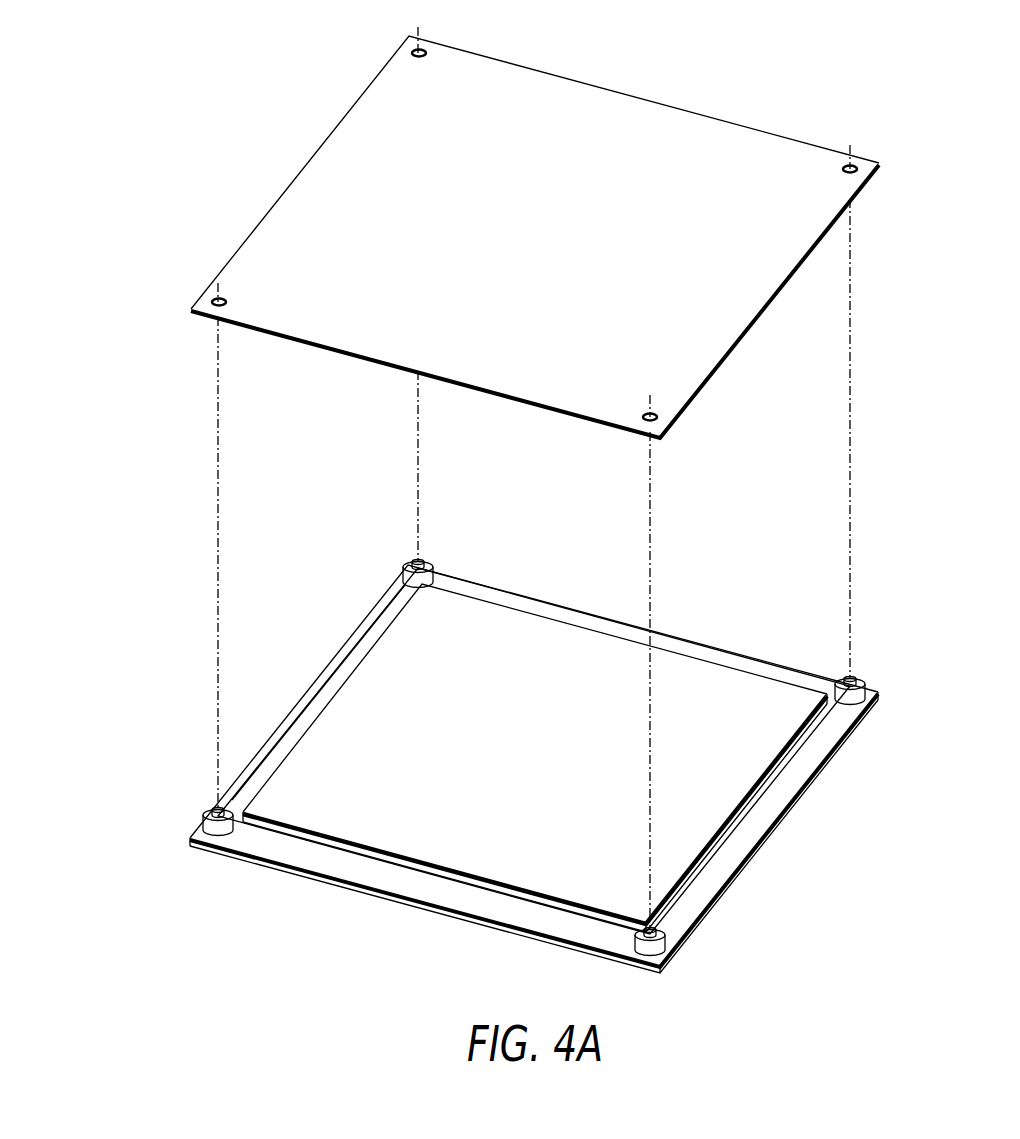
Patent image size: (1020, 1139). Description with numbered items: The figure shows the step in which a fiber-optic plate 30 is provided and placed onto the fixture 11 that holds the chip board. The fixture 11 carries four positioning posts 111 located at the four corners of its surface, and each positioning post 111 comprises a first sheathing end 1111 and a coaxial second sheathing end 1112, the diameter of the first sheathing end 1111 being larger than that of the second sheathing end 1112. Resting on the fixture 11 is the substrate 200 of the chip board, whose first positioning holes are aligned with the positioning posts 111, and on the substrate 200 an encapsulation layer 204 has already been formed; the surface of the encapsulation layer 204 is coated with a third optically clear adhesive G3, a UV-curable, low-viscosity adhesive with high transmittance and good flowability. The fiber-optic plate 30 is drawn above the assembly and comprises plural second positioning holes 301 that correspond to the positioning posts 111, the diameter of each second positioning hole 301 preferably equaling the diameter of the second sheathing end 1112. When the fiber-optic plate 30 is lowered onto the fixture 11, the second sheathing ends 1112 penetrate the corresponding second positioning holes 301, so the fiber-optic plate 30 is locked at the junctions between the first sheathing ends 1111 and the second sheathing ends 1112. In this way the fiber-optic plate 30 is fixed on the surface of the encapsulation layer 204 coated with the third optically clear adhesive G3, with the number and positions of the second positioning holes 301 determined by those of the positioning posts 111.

The fiber-optic plate 30 is at (328, 156).
The second positioning holes 301 is at (218, 300).
The fixture 11 is at (458, 918).
The positioning posts 111 is at (454, 758).
The first sheathing end 1111 is at (200, 826).
The second sheathing end 1112 is at (214, 806).
The substrate 200 is at (368, 893).
The encapsulation layer 204 is at (325, 840).
The third optically clear adhesive G3 is at (379, 668).